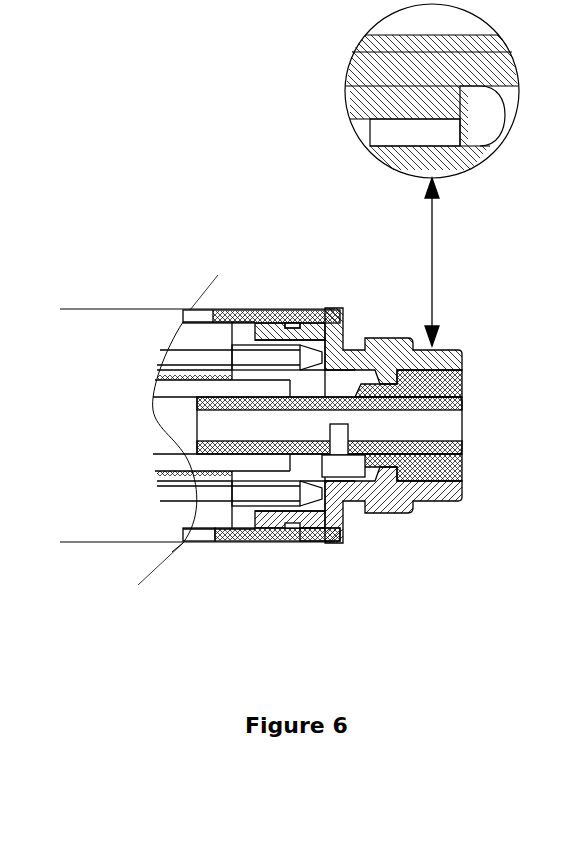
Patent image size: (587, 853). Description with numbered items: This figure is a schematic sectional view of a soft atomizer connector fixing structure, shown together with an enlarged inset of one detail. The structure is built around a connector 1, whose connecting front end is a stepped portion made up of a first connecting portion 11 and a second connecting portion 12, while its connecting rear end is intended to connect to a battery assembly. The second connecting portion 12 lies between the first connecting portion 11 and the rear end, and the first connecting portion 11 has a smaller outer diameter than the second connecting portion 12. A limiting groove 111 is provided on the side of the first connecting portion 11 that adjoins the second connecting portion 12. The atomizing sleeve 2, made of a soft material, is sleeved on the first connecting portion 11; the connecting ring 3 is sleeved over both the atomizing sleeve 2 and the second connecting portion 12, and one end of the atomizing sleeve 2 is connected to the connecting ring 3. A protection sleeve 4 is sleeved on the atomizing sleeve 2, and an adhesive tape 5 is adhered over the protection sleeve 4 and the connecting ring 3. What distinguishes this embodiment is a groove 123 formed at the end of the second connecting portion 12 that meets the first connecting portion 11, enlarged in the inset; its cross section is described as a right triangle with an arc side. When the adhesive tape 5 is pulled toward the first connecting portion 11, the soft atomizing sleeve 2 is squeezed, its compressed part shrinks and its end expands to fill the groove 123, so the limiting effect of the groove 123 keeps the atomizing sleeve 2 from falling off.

The connector 1 is at (347, 503).
The atomizing sleeve 2 is at (185, 310).
The connecting ring 3 is at (253, 543).
The protection sleeve 4 is at (203, 543).
The adhesive tape 5 is at (318, 545).
The first connecting portion 11 is at (270, 312).
The second connecting portion 12 is at (323, 310).
The limiting groove 111 is at (297, 545).
The groove 123 is at (478, 135).